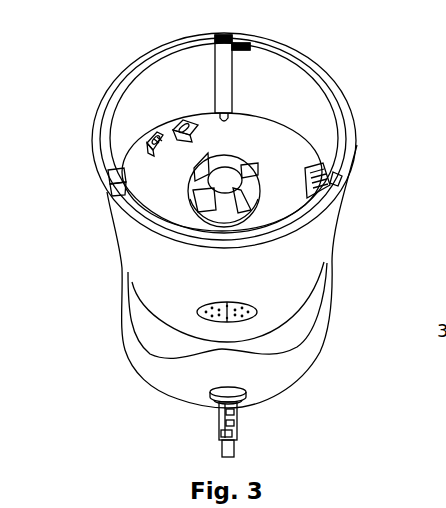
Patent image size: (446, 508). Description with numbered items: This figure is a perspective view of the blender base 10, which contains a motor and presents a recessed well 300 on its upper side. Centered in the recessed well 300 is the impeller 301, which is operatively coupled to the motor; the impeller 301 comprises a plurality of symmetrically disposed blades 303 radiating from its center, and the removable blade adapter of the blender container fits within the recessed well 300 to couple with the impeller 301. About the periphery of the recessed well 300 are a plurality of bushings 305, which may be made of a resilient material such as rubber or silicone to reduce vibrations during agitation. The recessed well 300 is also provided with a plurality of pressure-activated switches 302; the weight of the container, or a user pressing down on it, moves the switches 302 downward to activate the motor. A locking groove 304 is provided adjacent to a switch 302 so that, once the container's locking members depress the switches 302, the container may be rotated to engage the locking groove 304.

The blender base 10 is at (128, 249).
The recessed well 300 is at (290, 184).
The impeller 301 is at (234, 176).
The pressure-activated switches 302 is at (217, 78).
The blades 303 is at (260, 172).
The locking groove 304 is at (243, 40).
The bushings 305 is at (170, 124).